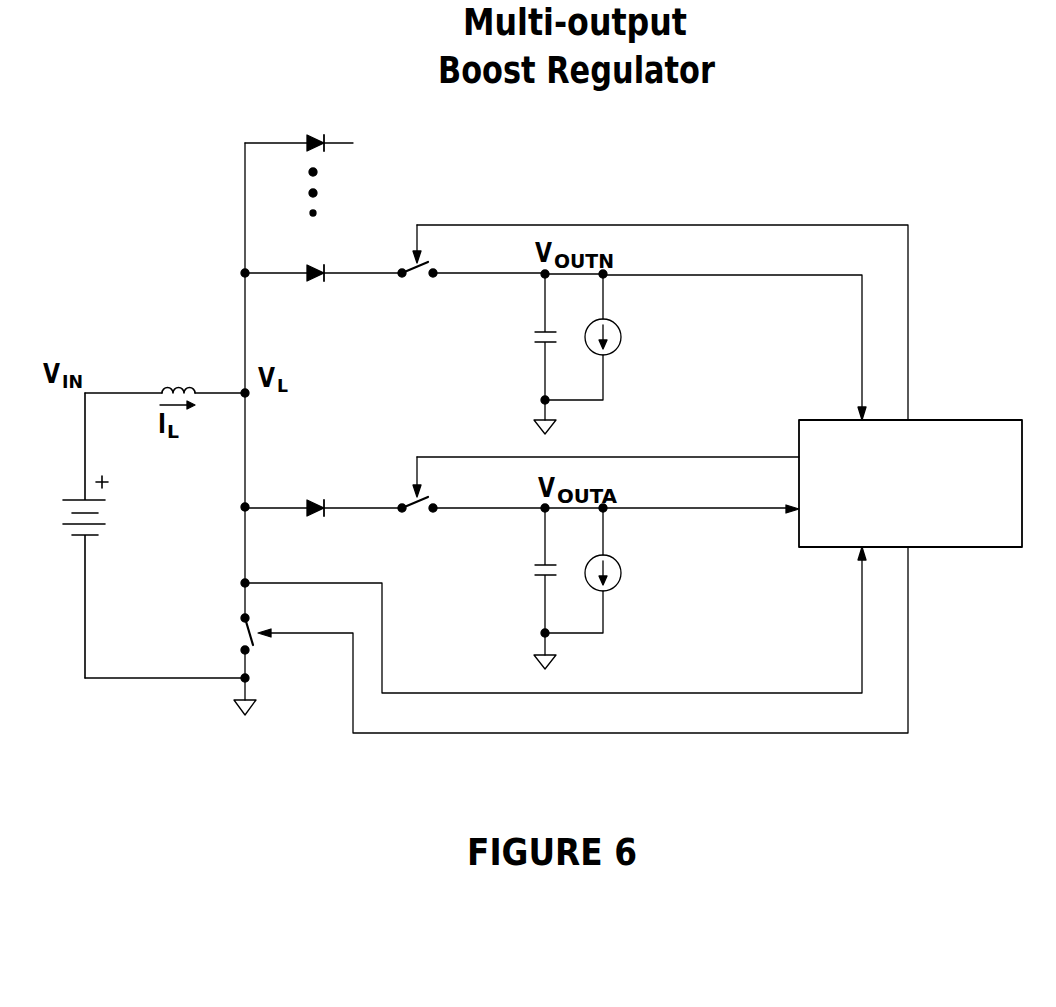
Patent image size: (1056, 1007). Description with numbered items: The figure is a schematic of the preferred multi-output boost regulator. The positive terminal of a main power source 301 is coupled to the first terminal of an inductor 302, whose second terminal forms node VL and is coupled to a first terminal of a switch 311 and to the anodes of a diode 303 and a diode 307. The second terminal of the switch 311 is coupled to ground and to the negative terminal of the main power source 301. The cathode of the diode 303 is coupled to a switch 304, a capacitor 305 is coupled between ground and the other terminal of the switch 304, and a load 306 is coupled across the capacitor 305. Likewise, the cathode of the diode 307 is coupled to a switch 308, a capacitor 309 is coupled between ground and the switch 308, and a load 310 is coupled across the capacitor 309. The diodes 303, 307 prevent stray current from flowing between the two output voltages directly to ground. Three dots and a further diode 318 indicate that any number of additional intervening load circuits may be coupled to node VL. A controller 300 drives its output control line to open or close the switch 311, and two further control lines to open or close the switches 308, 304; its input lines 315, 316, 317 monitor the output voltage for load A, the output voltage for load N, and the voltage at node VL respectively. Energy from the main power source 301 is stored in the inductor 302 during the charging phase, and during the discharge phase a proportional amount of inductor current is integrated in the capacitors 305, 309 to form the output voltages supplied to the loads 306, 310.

The controller 300 is at (910, 483).
The main power source 301 is at (109, 535).
The inductor 302 is at (165, 369).
The diode 303 is at (323, 255).
The switch 304 is at (644, 305).
The capacitor 305 is at (498, 354).
The load 306 is at (637, 337).
The diode 307 is at (323, 490).
The switch 308 is at (592, 501).
The capacitor 309 is at (493, 588).
The load 310 is at (635, 570).
The switch 311 is at (538, 640).
The input line 315 is at (616, 498).
The input line 316 is at (649, 346).
The input line 317 is at (555, 620).
The diode 318 is at (299, 125).